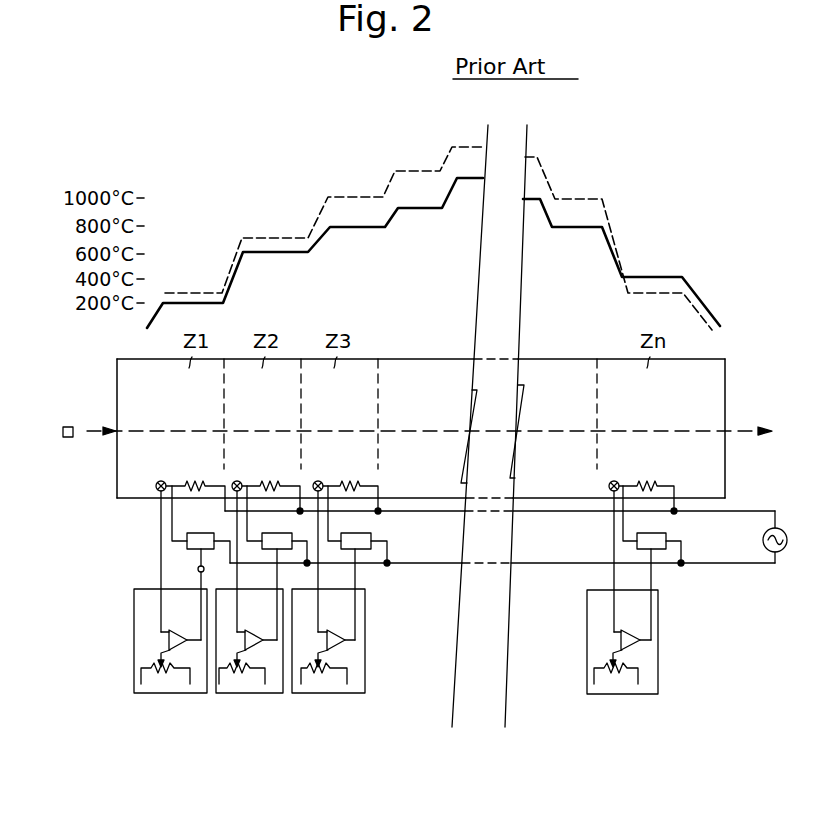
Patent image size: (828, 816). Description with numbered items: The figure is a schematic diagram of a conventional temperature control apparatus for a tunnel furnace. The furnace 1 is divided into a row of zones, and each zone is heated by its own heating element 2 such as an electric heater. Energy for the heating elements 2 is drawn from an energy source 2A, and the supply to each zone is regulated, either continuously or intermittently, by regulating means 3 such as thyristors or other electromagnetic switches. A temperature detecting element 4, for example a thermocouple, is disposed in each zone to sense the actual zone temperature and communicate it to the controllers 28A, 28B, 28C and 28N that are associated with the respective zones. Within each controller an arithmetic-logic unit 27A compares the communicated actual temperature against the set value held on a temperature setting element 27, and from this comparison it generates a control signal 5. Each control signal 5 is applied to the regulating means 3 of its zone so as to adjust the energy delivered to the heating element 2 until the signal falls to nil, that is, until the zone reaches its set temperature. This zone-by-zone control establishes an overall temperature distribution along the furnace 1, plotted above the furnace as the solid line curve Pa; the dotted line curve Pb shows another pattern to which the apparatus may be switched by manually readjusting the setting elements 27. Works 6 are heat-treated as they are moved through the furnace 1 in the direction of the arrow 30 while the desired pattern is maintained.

The furnace 1 is at (727, 373).
The heating element 2 is at (187, 483).
The energy source 2A is at (778, 553).
The regulating means 3 is at (189, 536).
The temperature detecting element 4 is at (156, 486).
The control signal 5 is at (197, 569).
The works 6 is at (68, 425).
The temperature setting element 27 is at (163, 668).
The arithmetic-logic unit 27A is at (200, 652).
The controller 28A is at (166, 668).
The controller 28B is at (275, 687).
The controller 28C is at (350, 687).
The controller 28N is at (647, 688).
The arrow 30 is at (100, 431).
The solid line curve Pa is at (667, 278).
The dotted line curve Pb is at (613, 232).